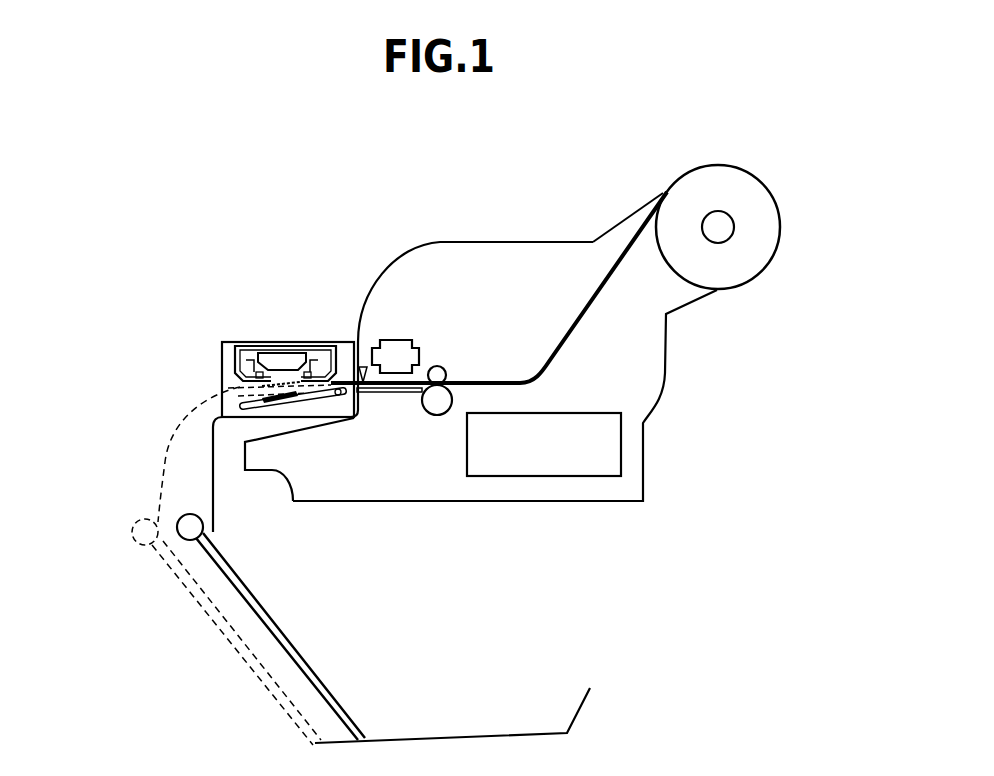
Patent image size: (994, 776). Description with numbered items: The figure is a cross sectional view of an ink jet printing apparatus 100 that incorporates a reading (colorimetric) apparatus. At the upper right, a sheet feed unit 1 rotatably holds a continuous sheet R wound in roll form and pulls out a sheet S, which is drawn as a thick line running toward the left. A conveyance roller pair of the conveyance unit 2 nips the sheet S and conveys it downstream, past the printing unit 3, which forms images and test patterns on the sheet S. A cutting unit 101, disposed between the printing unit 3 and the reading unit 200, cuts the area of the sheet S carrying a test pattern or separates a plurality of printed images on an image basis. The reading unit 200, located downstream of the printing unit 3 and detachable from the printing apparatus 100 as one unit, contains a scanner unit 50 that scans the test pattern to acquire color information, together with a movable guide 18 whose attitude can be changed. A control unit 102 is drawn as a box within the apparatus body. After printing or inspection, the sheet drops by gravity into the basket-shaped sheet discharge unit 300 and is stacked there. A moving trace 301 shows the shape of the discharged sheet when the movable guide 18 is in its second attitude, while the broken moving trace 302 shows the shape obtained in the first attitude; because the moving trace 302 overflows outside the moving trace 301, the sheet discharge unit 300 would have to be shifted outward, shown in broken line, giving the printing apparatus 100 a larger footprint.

The printing apparatus 100 is at (462, 228).
The cutting unit 101 is at (361, 365).
The control unit 102 is at (621, 443).
The sheet feed unit 1 is at (722, 230).
The conveyance unit 2 is at (446, 373).
The printing unit 3 is at (398, 340).
The movable guide 18 is at (335, 404).
The scanner unit 50 is at (236, 357).
The reading unit 200 is at (280, 342).
The sheet discharge unit 300 is at (277, 627).
The moving trace 301 is at (213, 428).
The moving trace 302 is at (163, 472).
The sheet S is at (599, 288).
The continuous sheet R is at (772, 217).